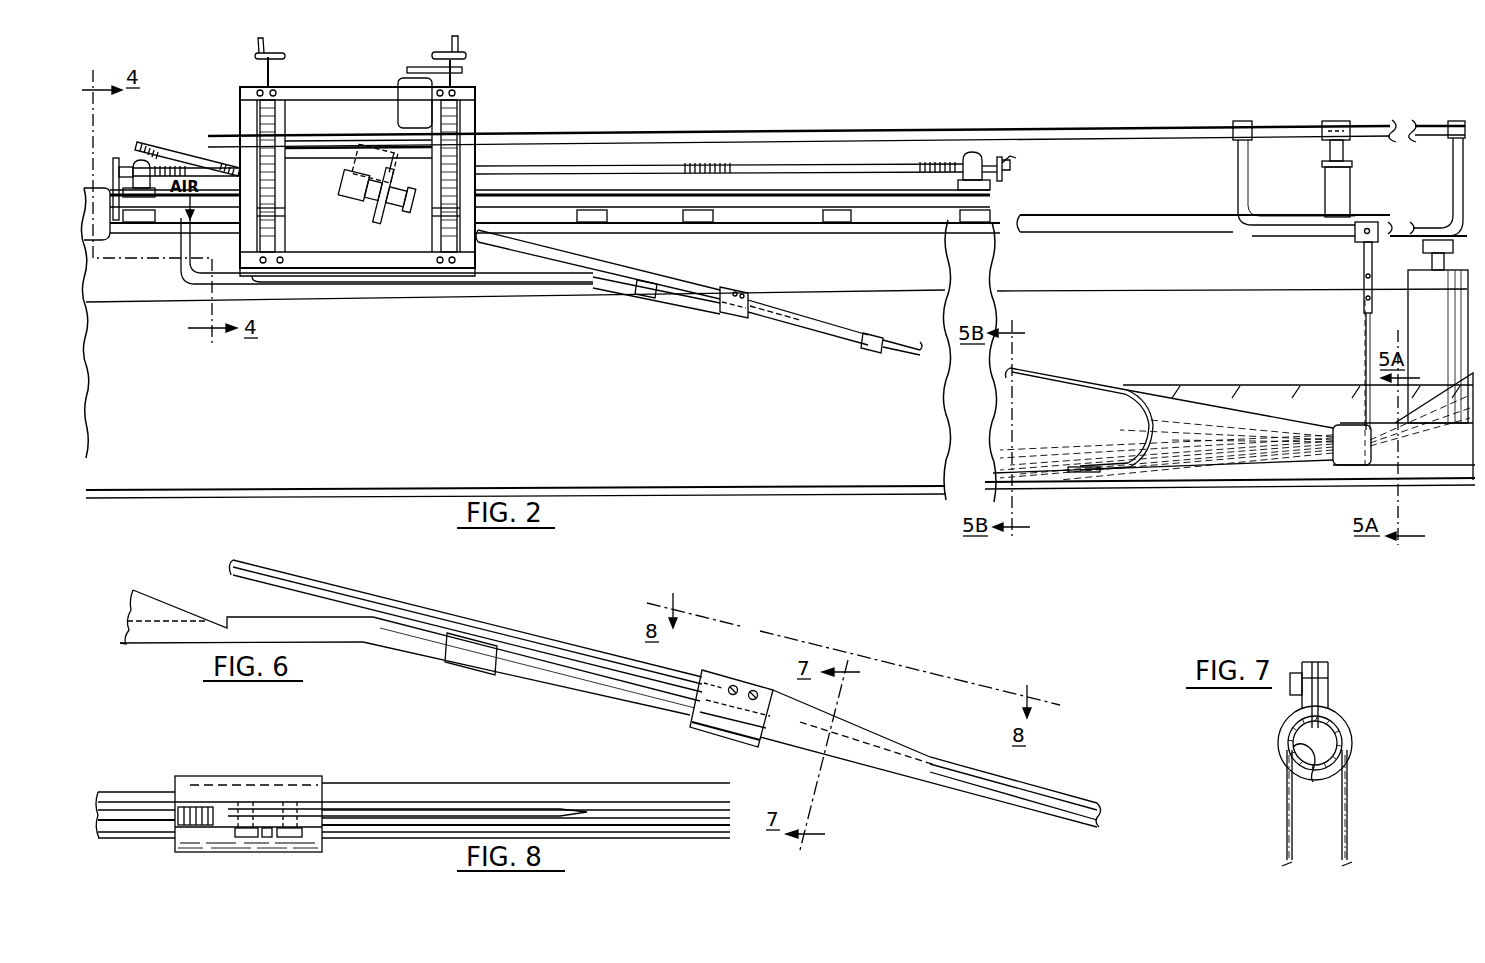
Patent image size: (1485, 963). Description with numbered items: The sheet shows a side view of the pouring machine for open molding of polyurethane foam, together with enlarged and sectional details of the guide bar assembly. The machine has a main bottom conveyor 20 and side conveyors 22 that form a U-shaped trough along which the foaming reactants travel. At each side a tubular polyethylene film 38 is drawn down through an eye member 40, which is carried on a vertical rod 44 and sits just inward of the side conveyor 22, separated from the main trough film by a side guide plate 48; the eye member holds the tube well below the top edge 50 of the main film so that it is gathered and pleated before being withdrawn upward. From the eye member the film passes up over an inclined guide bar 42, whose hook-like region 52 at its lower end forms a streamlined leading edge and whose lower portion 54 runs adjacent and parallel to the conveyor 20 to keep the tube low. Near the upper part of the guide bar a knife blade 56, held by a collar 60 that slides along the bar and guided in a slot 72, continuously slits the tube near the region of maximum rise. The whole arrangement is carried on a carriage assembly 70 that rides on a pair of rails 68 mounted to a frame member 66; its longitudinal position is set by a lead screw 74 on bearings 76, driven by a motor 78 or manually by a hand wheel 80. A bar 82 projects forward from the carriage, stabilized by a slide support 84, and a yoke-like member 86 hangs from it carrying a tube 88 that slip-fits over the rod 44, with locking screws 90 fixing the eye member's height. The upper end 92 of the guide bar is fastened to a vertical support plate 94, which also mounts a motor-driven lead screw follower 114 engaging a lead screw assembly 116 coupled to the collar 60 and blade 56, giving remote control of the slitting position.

In FIG. 2, the conveyor 20 is at (905, 487).
In FIG. 2, the side conveyor 22 is at (1158, 292).
In FIG. 2, the tubular shaped polyethylene film 38 is at (1213, 410).
In FIG. 7, the tubular shaped polyethylene film 38 is at (1347, 835).
In FIG. 2, the eye member 40 is at (1368, 463).
In FIG. 2, the guide bar 42 is at (1018, 370).
In FIG. 6, the guide bar 42 is at (1062, 796).
In FIG. 8, the guide bar 42 is at (490, 792).
In FIG. 7, the guide bar 42 is at (1310, 778).
In FIG. 2, the vertical rod 44 is at (1364, 330).
In FIG. 2, the side guide plate 48 is at (1437, 450).
In FIG. 2, the top edge of the film 50 is at (1285, 385).
In FIG. 2, the hook-like region 52 is at (1140, 418).
In FIG. 2, the lower portion 54 is at (1095, 472).
In FIG. 2, the knife blade 56 is at (780, 306).
In FIG. 6, the knife blade 56 is at (845, 722).
In FIG. 8, the knife blade 56 is at (425, 808).
In FIG. 7, the knife blade 56 is at (1318, 712).
In FIG. 2, the collar 60 is at (732, 288).
In FIG. 6, the collar 60 is at (740, 680).
In FIG. 8, the collar 60 is at (210, 776).
In FIG. 7, the collar 60 is at (1285, 728).
In FIG. 2, the frame member 66 is at (1110, 215).
In FIG. 2, the rails 68 is at (905, 195).
In FIG. 2, the carriage assembly 70 is at (478, 112).
In FIG. 8, the slot 72 is at (606, 808).
In FIG. 7, the slot 72 is at (1340, 730).
In FIG. 2, the lead screw 74 is at (565, 166).
In FIG. 2, the bearings 76 is at (138, 160).
In FIG. 2, the motor 78 is at (104, 240).
In FIG. 2, the hand wheel 80 is at (1012, 172).
In FIG. 2, the bar 82 is at (675, 134).
In FIG. 2, the slide support 84 is at (1336, 120).
In FIG. 2, the yoke-like member 86 is at (1292, 226).
In FIG. 2, the tube 88 is at (1362, 250).
In FIG. 2, the locking screws 90 is at (1372, 290).
In FIG. 2, the upper end of the guide bar 92 is at (597, 288).
In FIG. 6, the upper end of the guide bar 92 is at (372, 640).
In FIG. 8, the upper end of the guide bar 92 is at (118, 790).
In FIG. 2, the support plate 94 is at (506, 270).
In FIG. 6, the support plate 94 is at (158, 600).
In FIG. 2, the lead screw follower 114 is at (358, 208).
In FIG. 2, the lead screw assembly 116 is at (180, 150).